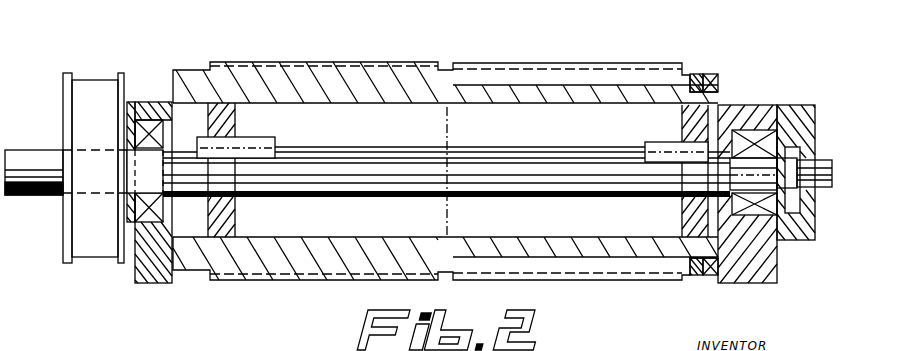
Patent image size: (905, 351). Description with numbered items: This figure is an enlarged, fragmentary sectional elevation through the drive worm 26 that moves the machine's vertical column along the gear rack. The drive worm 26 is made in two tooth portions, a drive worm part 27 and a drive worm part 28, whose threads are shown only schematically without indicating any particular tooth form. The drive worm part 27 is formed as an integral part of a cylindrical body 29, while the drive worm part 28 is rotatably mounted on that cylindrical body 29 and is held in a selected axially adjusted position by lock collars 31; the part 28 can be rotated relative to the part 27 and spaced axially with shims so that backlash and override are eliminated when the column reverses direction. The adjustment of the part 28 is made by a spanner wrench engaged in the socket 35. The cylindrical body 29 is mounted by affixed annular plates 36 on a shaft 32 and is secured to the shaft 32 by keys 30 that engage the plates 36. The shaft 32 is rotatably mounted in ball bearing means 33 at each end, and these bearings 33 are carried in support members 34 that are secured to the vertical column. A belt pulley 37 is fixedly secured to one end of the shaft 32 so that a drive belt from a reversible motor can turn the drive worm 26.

The drive worm 26 is at (306, 62).
The drive worm part 27 is at (340, 72).
The drive worm part 28 is at (500, 72).
The cylindrical body 29 is at (313, 243).
The keys 30 is at (262, 143).
The lock collars 31 is at (710, 74).
The shaft 32 is at (385, 157).
The ball bearing means 33 is at (148, 212).
The support members 34 is at (160, 110).
The socket 35 is at (690, 74).
The annular plates 36 is at (227, 115).
The belt pulley 37 is at (97, 84).